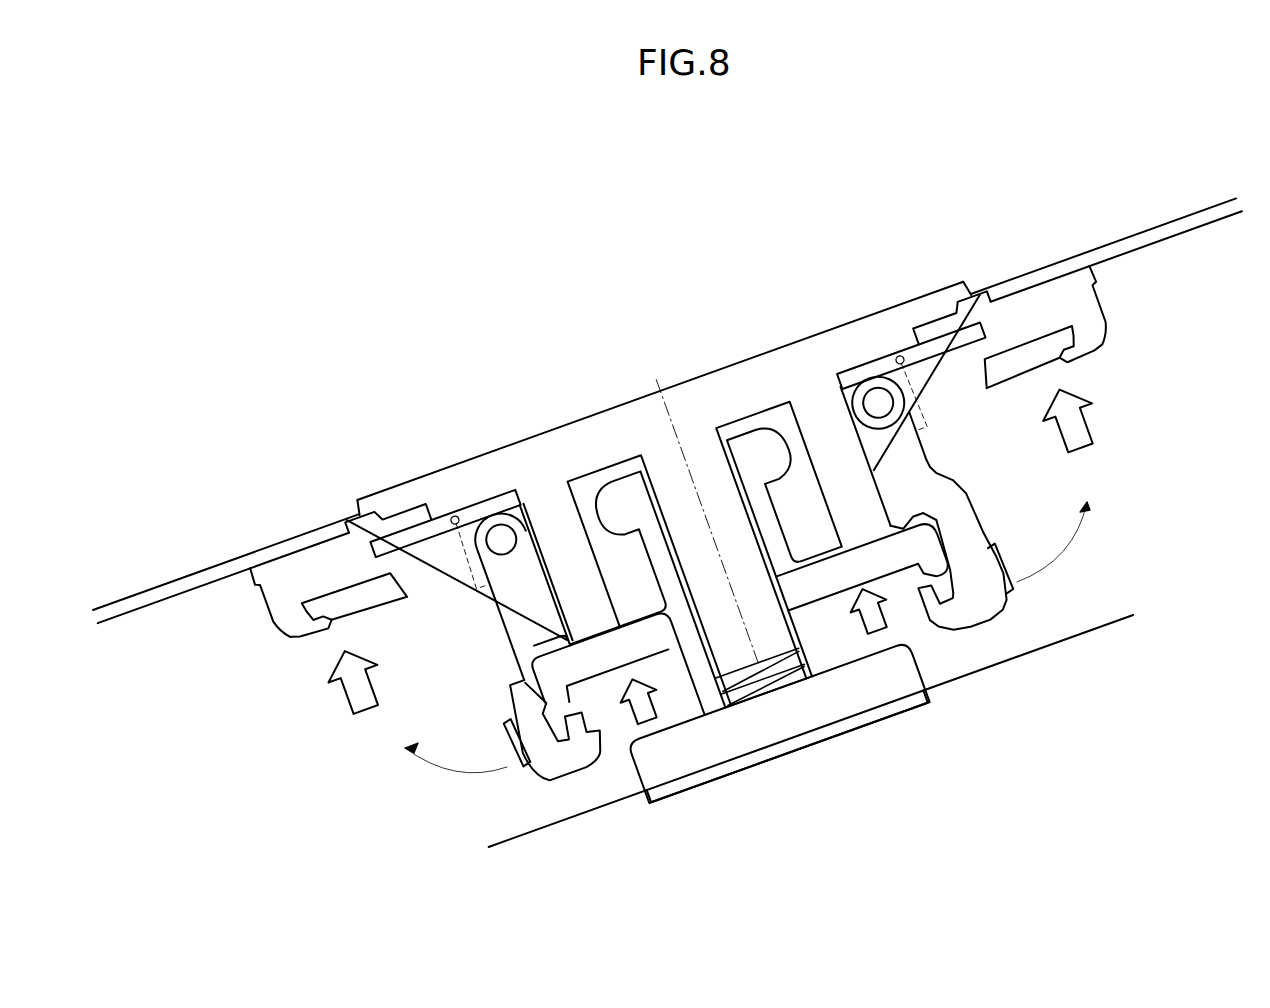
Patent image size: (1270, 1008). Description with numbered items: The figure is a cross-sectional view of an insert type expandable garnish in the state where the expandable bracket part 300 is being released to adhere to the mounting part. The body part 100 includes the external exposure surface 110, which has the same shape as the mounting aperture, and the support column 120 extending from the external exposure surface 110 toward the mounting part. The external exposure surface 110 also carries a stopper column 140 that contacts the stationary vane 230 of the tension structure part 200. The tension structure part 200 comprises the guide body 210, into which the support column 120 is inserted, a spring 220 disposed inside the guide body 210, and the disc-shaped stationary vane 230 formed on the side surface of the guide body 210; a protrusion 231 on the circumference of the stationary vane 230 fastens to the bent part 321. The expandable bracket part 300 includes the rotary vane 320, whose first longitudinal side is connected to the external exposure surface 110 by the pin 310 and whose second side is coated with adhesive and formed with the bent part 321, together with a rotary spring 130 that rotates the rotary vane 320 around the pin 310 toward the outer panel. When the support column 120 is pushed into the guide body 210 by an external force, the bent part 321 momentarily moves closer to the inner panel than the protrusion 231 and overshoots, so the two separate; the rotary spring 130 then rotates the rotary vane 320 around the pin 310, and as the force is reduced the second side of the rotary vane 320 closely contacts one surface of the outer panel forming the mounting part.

The body part 100 is at (635, 452).
The external exposure surface 110 is at (750, 372).
The support column 120 is at (727, 512).
The rotary spring 130 is at (485, 507).
The stopper column 140 is at (880, 482).
The tension structure part 200 is at (812, 735).
The guide body 210 is at (697, 680).
The spring 220 is at (790, 700).
The stationary vane 230 is at (742, 713).
The protrusion 231 is at (567, 740).
The expandable bracket part 300 is at (612, 483).
The pin 310 is at (870, 370).
The rotary vane 320 is at (360, 573).
The bent part 321 is at (305, 640).